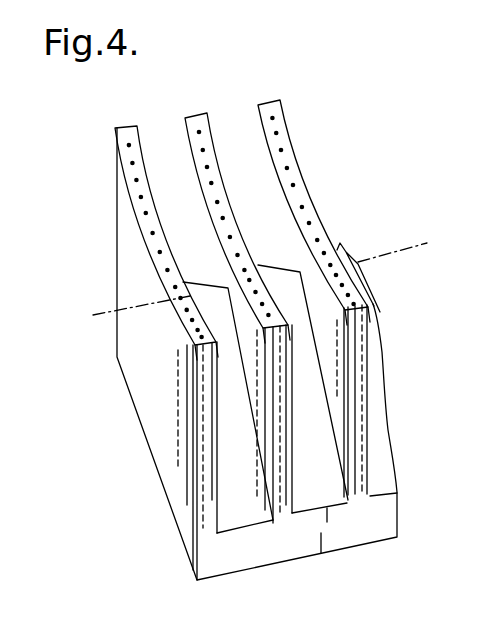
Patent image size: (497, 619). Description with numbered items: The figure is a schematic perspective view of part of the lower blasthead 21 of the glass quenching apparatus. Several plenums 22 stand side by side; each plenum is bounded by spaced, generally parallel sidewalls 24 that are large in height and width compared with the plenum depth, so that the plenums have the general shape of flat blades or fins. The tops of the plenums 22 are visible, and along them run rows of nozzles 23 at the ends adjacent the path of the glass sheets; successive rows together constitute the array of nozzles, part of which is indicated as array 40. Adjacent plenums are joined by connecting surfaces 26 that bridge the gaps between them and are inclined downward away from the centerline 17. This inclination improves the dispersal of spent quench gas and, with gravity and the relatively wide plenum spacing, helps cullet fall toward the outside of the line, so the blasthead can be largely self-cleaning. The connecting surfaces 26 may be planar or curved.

The array of nozzles 40 is at (306, 112).
The plenums 22 is at (188, 113).
The rows of nozzles 23 is at (295, 185).
The connecting surfaces 26 is at (252, 506).
The lower blasthead 21 is at (369, 271).
The centerline 17 is at (398, 251).
The sidewalls 24 is at (376, 408).